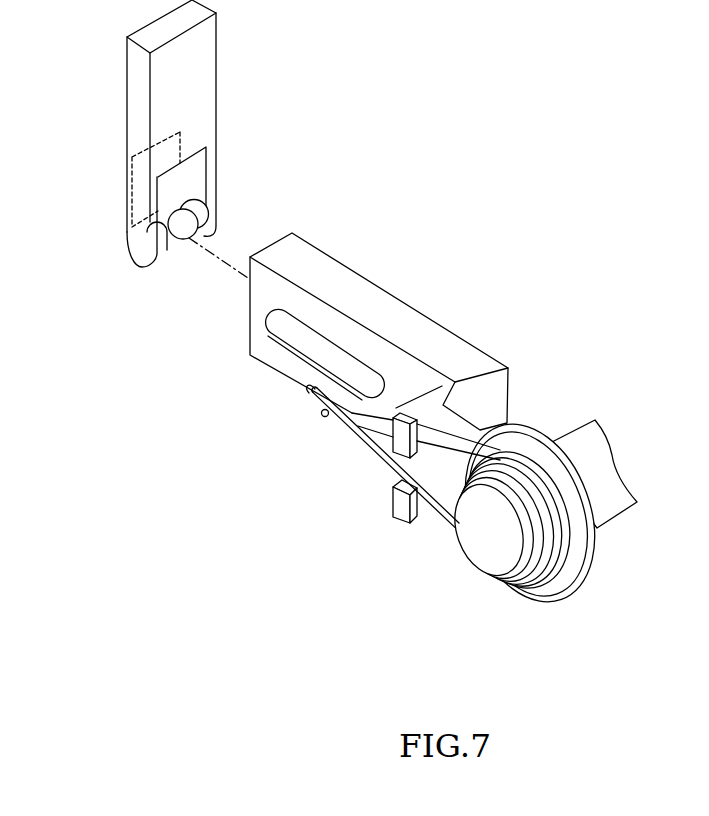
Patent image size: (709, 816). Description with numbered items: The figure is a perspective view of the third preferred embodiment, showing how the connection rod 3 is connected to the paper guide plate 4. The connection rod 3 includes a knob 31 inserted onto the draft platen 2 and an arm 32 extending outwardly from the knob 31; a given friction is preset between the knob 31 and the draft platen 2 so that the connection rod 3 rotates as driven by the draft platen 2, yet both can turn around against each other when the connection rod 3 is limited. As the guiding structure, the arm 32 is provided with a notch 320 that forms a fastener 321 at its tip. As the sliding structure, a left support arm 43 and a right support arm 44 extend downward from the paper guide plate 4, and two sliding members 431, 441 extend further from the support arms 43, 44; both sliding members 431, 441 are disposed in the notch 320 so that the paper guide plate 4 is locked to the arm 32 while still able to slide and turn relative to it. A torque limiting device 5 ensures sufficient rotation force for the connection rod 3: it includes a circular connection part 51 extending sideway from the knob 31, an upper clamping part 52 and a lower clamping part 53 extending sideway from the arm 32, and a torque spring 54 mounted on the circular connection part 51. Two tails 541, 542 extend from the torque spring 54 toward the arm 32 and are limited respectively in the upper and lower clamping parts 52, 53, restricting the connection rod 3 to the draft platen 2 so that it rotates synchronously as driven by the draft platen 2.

The draft platen 2 is at (484, 548).
The connection rod 3 is at (432, 404).
The knob 31 is at (588, 543).
The arm 32 is at (350, 309).
The notch 320 is at (302, 344).
The fastener 321 is at (283, 291).
The paper guide plate 4 is at (185, 170).
The left support arm 43 is at (127, 197).
The sliding member 431 is at (168, 242).
The right support arm 44 is at (210, 174).
The sliding member 441 is at (199, 228).
The torque limiting device 5 is at (440, 492).
The circular connection part 51 is at (531, 572).
The upper clamping part 52 is at (405, 432).
The lower clamping part 53 is at (406, 507).
The torque spring 54 is at (440, 500).
The tail 541 is at (315, 392).
The tail 542 is at (324, 417).